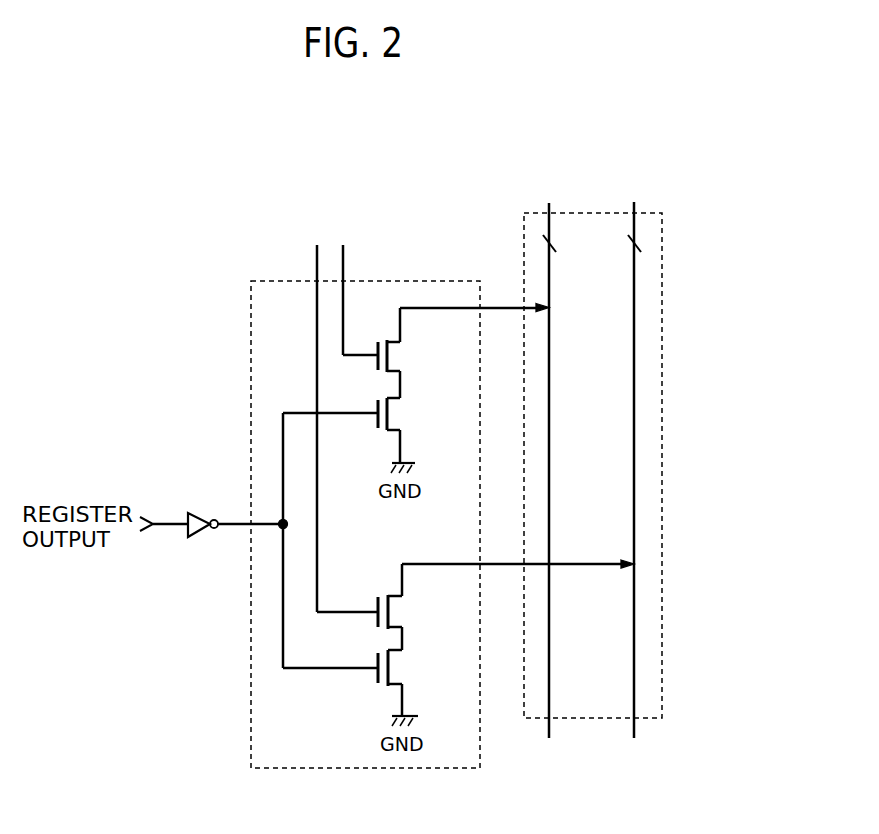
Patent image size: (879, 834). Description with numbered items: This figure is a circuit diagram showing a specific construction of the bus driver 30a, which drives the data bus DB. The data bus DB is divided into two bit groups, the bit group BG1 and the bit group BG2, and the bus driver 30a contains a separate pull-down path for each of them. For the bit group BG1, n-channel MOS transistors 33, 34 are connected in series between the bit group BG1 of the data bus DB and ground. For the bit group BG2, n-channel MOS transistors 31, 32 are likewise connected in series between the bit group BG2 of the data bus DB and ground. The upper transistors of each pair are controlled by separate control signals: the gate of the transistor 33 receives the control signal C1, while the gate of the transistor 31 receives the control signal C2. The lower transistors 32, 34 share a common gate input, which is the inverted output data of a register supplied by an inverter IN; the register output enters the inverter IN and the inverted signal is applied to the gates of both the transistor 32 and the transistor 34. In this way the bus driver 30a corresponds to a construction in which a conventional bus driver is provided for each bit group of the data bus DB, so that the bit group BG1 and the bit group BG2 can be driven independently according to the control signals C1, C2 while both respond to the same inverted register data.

The bus driver 30a is at (413, 281).
The n-channel MOS transistor 31 is at (392, 353).
The n-channel MOS transistor 32 is at (392, 413).
The n-channel MOS transistor 33 is at (393, 612).
The n-channel MOS transistor 34 is at (393, 668).
The inverter IN is at (198, 512).
The control signal C1 is at (336, 414).
The control signal C2 is at (353, 286).
The data bus DB is at (662, 293).
The bit group BG1 is at (634, 305).
The bit group BG2 is at (548, 296).